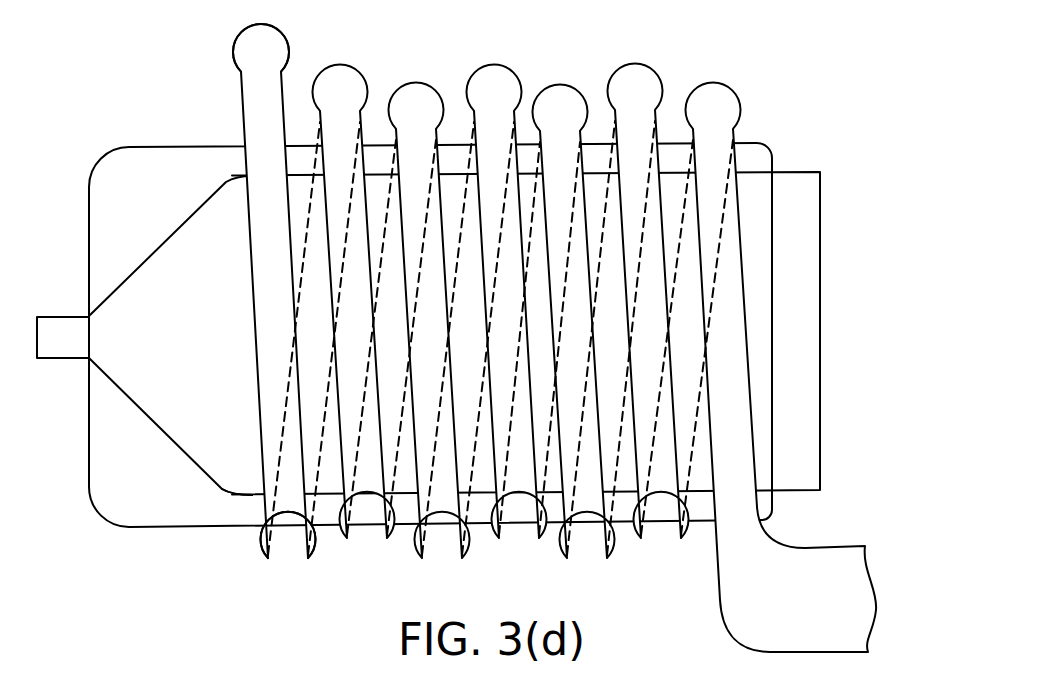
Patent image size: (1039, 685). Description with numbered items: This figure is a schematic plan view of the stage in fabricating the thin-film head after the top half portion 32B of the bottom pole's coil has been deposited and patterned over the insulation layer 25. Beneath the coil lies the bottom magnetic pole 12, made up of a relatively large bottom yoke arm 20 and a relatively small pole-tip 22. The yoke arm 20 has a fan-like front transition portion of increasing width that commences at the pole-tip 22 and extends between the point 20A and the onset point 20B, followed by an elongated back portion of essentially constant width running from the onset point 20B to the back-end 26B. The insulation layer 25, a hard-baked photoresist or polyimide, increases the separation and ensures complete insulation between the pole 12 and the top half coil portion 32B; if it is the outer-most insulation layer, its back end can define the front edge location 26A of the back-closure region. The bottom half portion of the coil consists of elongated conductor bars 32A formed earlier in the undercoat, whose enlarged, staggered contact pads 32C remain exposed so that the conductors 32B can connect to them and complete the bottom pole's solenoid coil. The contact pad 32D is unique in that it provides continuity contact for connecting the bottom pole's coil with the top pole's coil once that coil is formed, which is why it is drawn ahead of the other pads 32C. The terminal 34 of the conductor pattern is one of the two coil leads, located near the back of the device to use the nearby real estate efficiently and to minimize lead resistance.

The bottom magnetic pole 12 is at (228, 346).
The bottom yoke arm 20 is at (483, 343).
The front end of fan-like transition portion 20A is at (89, 358).
The onset point 20B is at (227, 490).
The pole-tip 22 is at (71, 345).
The insulation layer 25 is at (110, 517).
The front edge location of back-closure region 26A is at (773, 372).
The back-end of bottom yoke arm 26B is at (821, 270).
The conductor bars 32A is at (313, 505).
The top half portion of bottom pole's coil 32B is at (273, 233).
The contact pads 32C is at (407, 100).
The contact pad 32D is at (247, 47).
The coil lead terminal 34 is at (830, 611).